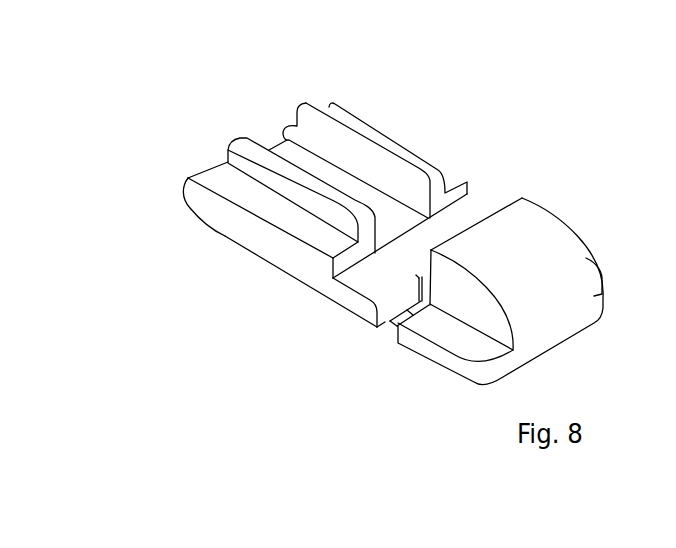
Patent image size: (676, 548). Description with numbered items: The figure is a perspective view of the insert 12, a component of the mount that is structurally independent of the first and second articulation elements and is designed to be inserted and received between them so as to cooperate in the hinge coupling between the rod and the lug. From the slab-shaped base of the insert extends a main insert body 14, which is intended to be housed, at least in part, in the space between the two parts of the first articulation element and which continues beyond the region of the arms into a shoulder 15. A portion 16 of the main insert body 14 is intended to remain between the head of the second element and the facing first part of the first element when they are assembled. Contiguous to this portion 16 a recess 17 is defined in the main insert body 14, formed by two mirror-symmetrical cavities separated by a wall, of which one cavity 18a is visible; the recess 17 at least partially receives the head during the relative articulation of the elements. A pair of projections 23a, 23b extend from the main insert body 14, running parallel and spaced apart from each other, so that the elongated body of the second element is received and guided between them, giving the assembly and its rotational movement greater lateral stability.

The insert 12 is at (494, 136).
The main insert body 14 is at (200, 207).
The shoulder 15 is at (523, 230).
The portion of the main body 16 is at (378, 290).
The recess 17 is at (387, 338).
The cavity 18a is at (386, 313).
The projection 23a is at (243, 142).
The projection 23b is at (313, 100).